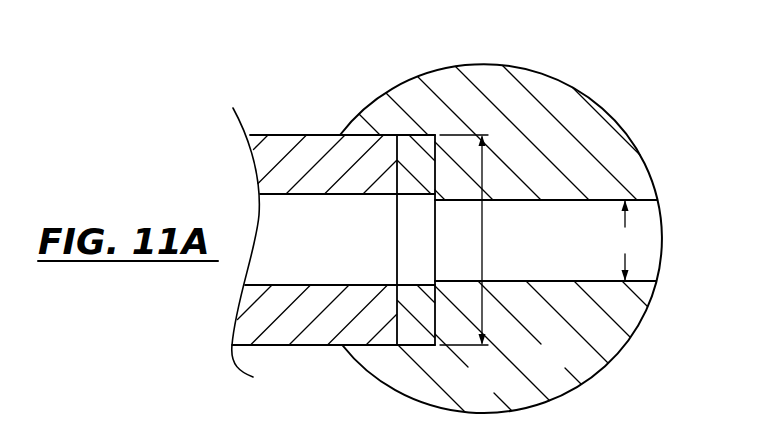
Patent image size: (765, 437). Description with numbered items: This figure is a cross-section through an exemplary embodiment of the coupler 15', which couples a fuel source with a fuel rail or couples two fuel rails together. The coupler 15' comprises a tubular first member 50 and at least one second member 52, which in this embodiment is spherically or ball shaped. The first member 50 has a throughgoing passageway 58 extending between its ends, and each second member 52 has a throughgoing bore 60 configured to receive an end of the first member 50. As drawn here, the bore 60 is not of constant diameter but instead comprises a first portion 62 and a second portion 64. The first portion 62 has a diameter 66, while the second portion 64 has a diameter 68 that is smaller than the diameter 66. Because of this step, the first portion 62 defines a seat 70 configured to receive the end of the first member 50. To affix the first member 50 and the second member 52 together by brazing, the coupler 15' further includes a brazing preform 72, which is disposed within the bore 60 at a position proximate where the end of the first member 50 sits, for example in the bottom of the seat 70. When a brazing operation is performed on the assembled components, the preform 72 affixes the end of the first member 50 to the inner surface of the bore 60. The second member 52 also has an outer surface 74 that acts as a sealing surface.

The coupler 15' is at (303, 57).
The first member 50 is at (279, 150).
The second member 52 is at (513, 65).
The throughgoing passageway 58 is at (306, 253).
The throughgoing bore 60 is at (376, 134).
The first portion 62 is at (373, 357).
The second portion 64 is at (549, 297).
The diameter 66 is at (482, 207).
The diameter 68 is at (629, 240).
The seat 70 is at (398, 346).
The brazing preform 72 is at (398, 245).
The outer surface 74 is at (630, 140).